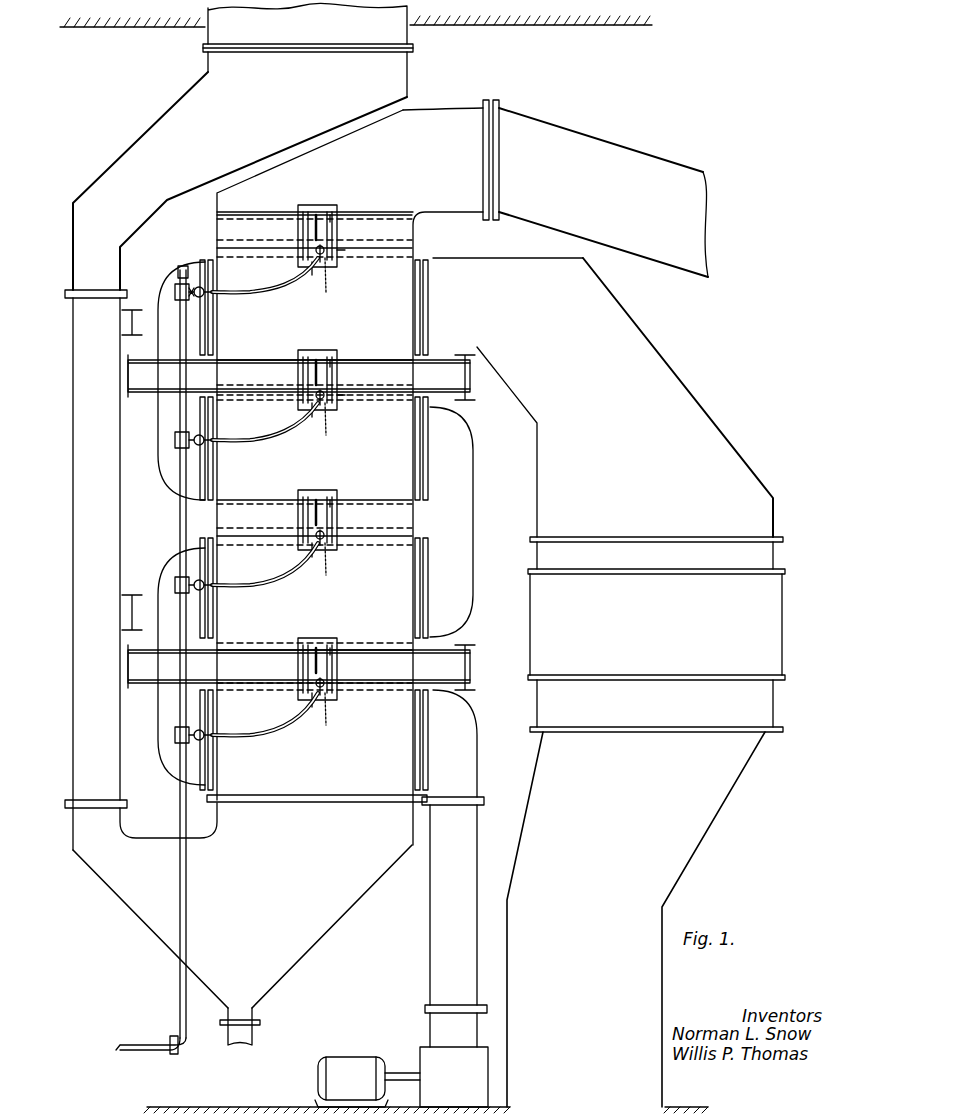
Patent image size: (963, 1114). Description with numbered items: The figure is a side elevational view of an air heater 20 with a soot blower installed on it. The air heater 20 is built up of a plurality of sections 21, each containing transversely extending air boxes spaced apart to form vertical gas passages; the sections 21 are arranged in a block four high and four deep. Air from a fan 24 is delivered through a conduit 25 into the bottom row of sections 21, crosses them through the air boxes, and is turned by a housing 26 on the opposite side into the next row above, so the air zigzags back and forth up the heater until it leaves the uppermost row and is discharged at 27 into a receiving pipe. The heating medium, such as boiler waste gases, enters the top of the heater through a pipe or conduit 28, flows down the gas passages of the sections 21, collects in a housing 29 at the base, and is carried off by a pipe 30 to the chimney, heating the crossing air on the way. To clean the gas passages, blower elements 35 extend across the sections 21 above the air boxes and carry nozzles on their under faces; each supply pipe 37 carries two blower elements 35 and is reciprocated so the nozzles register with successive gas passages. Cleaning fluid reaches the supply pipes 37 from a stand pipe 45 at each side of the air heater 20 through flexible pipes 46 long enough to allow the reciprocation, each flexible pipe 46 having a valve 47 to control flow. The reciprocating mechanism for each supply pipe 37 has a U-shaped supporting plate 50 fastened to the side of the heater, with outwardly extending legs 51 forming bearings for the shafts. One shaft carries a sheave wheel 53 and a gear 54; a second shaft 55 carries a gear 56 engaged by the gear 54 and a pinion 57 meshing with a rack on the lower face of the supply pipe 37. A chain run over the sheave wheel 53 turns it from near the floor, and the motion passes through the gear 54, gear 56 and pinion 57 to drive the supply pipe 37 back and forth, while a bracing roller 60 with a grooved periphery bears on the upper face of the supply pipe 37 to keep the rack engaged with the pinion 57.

The air heater 20 is at (463, 513).
The section 21 is at (418, 268).
The fan 24 is at (345, 1065).
The conduit 25 is at (432, 920).
The housing 26 is at (165, 420).
The discharge 27 is at (470, 275).
The pipe or conduit 28 is at (447, 123).
The housing 29 is at (308, 920).
The pipe 30 is at (105, 527).
The blower element 35 is at (245, 245).
The supply pipe 37 is at (340, 241).
The stand pipe 45 is at (188, 872).
The flexible pipe 46 is at (260, 303).
The valve 47 is at (205, 440).
The supporting plate 50 is at (330, 212).
The legs 51 is at (340, 352).
The sheave wheel 53 is at (345, 222).
The gear 54 is at (309, 215).
The second shaft 55 is at (321, 275).
The gear 56 is at (313, 266).
The pinion 57 is at (315, 415).
The bracing roller 60 is at (330, 357).